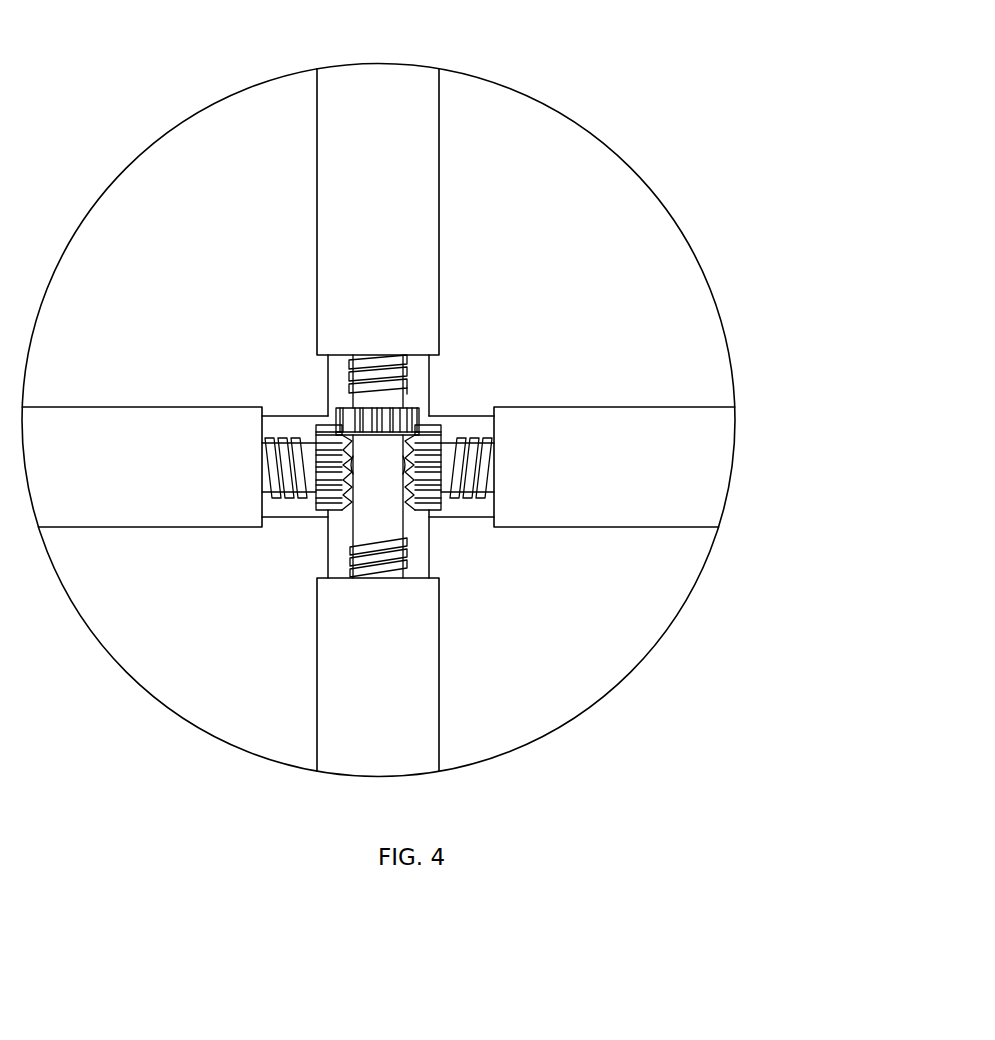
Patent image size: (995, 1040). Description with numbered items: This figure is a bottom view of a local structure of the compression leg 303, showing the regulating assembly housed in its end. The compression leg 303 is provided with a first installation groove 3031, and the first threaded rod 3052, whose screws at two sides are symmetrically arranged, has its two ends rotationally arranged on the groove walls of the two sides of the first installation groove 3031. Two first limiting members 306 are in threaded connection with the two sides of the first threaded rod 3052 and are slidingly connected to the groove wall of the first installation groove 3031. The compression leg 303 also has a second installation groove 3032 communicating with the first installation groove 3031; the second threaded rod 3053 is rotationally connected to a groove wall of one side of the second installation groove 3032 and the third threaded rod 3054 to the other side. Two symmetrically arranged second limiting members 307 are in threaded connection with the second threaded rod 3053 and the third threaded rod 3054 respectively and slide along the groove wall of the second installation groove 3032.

The compression leg 303 is at (597, 172).
The first limiting member 306 is at (441, 96).
The second limiting member 307 is at (707, 398).
The first installation groove 3031 is at (417, 378).
The second installation groove 3032 is at (477, 427).
The first threaded rod 3052 is at (357, 358).
The second threaded rod 3053 is at (305, 445).
The third threaded rod 3054 is at (452, 493).